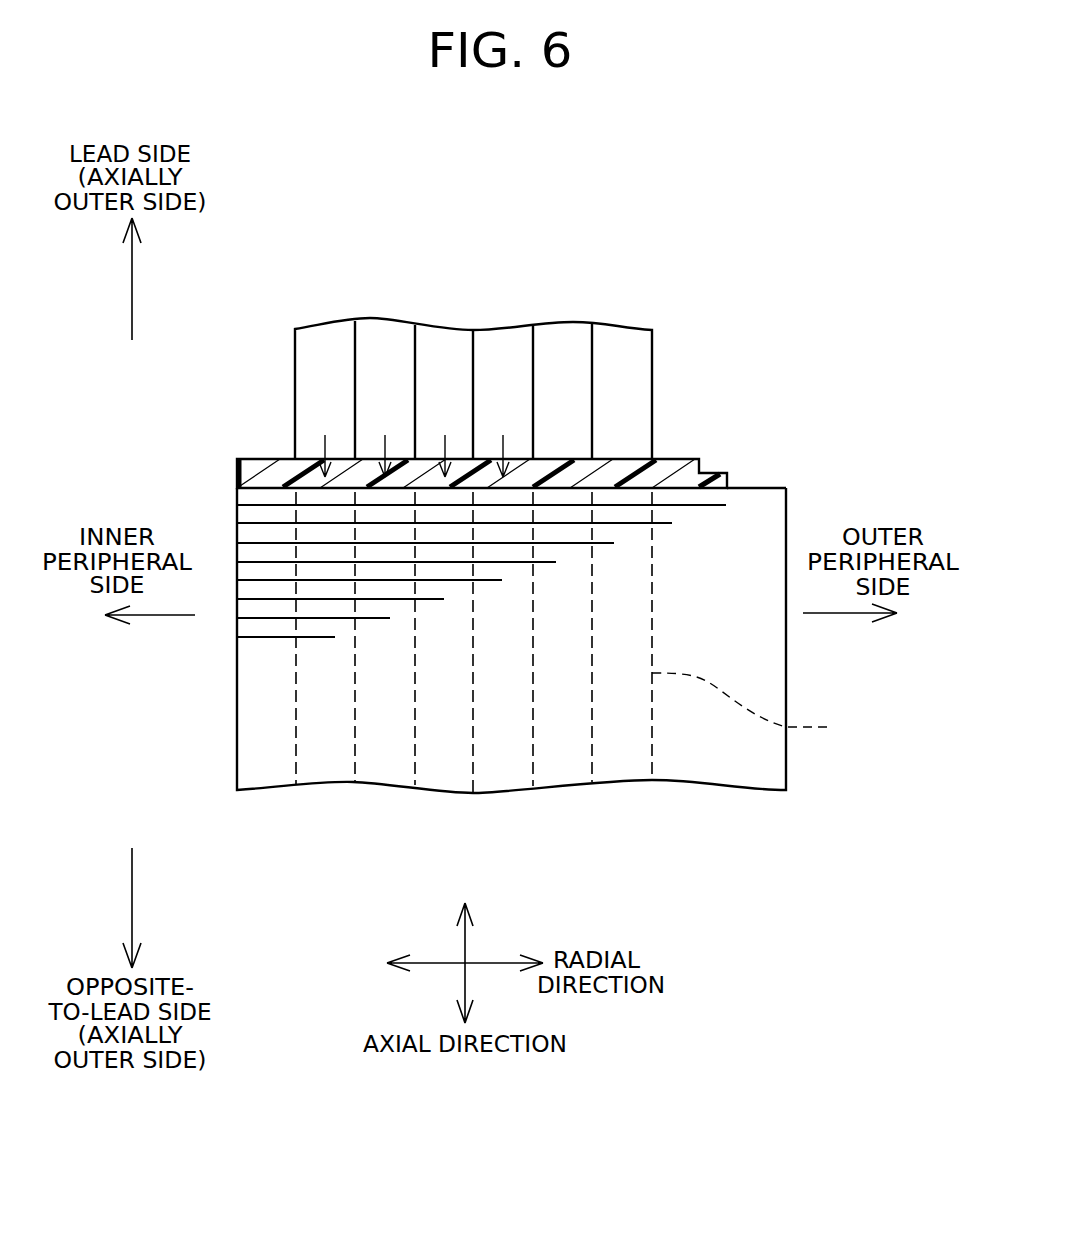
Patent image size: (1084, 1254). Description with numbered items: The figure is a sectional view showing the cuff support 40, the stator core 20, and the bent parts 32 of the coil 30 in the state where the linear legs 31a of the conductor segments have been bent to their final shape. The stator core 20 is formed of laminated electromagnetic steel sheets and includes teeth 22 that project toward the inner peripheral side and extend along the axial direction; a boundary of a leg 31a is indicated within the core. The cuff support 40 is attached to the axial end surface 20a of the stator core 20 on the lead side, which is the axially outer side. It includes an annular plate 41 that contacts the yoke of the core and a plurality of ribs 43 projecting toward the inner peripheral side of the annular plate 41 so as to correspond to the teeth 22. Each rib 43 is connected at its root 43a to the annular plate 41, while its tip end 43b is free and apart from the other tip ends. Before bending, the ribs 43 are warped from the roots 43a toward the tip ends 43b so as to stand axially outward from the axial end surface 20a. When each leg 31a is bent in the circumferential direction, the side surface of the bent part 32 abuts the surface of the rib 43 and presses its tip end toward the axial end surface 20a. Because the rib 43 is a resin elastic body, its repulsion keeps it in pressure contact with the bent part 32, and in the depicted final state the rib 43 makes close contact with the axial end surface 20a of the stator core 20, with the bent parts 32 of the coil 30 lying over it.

The stator core 20 is at (520, 592).
The axial end surface 20a is at (768, 485).
The tooth 22 is at (257, 715).
The coil 30 is at (561, 331).
The leg 31a is at (765, 708).
The bent part 32 is at (565, 352).
The cuff support 40 is at (504, 383).
The annular plate 41 is at (712, 472).
The rib 43 is at (608, 473).
The root 43a is at (632, 462).
The tip end 43b is at (235, 475).